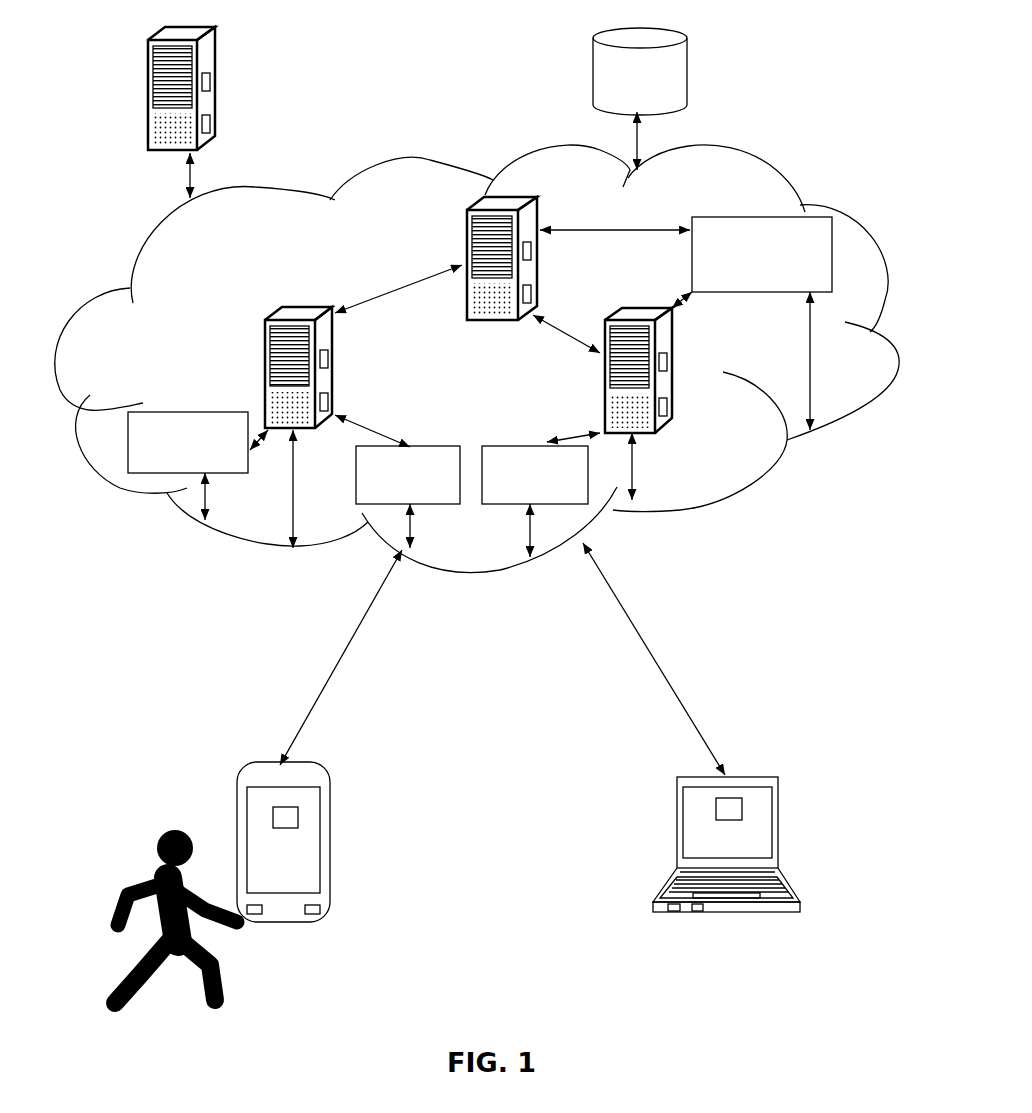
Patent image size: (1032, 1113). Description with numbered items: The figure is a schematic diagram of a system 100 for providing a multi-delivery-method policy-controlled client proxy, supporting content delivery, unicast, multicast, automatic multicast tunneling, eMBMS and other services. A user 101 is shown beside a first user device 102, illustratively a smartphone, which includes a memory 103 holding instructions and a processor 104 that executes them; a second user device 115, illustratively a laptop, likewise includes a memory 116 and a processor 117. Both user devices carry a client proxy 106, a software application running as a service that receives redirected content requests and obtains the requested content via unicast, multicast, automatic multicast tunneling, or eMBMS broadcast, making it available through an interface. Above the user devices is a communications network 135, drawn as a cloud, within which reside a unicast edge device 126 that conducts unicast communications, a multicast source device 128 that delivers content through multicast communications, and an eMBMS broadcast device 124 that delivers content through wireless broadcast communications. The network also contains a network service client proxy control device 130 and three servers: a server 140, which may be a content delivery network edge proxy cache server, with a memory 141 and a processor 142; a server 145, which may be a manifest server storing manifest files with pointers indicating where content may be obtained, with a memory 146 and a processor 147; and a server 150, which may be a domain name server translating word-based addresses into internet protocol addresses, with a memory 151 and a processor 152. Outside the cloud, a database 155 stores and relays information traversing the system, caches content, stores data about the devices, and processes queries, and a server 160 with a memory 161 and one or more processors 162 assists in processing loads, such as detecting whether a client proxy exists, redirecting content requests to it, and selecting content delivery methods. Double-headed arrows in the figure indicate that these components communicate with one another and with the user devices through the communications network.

The system 100 is at (543, 930).
The user 101 is at (127, 1010).
The first user device 102 is at (237, 818).
The memory 103 is at (253, 914).
The processor 104 is at (312, 914).
The client proxy 106 is at (298, 818).
The second user device 115 is at (677, 781).
The memory 116 is at (674, 912).
The processor 117 is at (697, 912).
The eMBMS broadcast device 124 is at (195, 412).
The unicast edge device 126 is at (437, 504).
The multicast source device 128 is at (531, 446).
The network service client proxy control device 130 is at (825, 217).
The communications network 135 is at (140, 237).
The server 140 is at (467, 233).
The memory 141 is at (531, 250).
The processor 142 is at (531, 293).
The server 145 is at (265, 342).
The memory 146 is at (328, 358).
The processor 147 is at (328, 402).
The server 150 is at (670, 330).
The memory 151 is at (667, 362).
The processor 152 is at (667, 407).
The database 155 is at (640, 71).
The server 160 is at (148, 63).
The memory 161 is at (210, 122).
The processors 162 is at (210, 81).